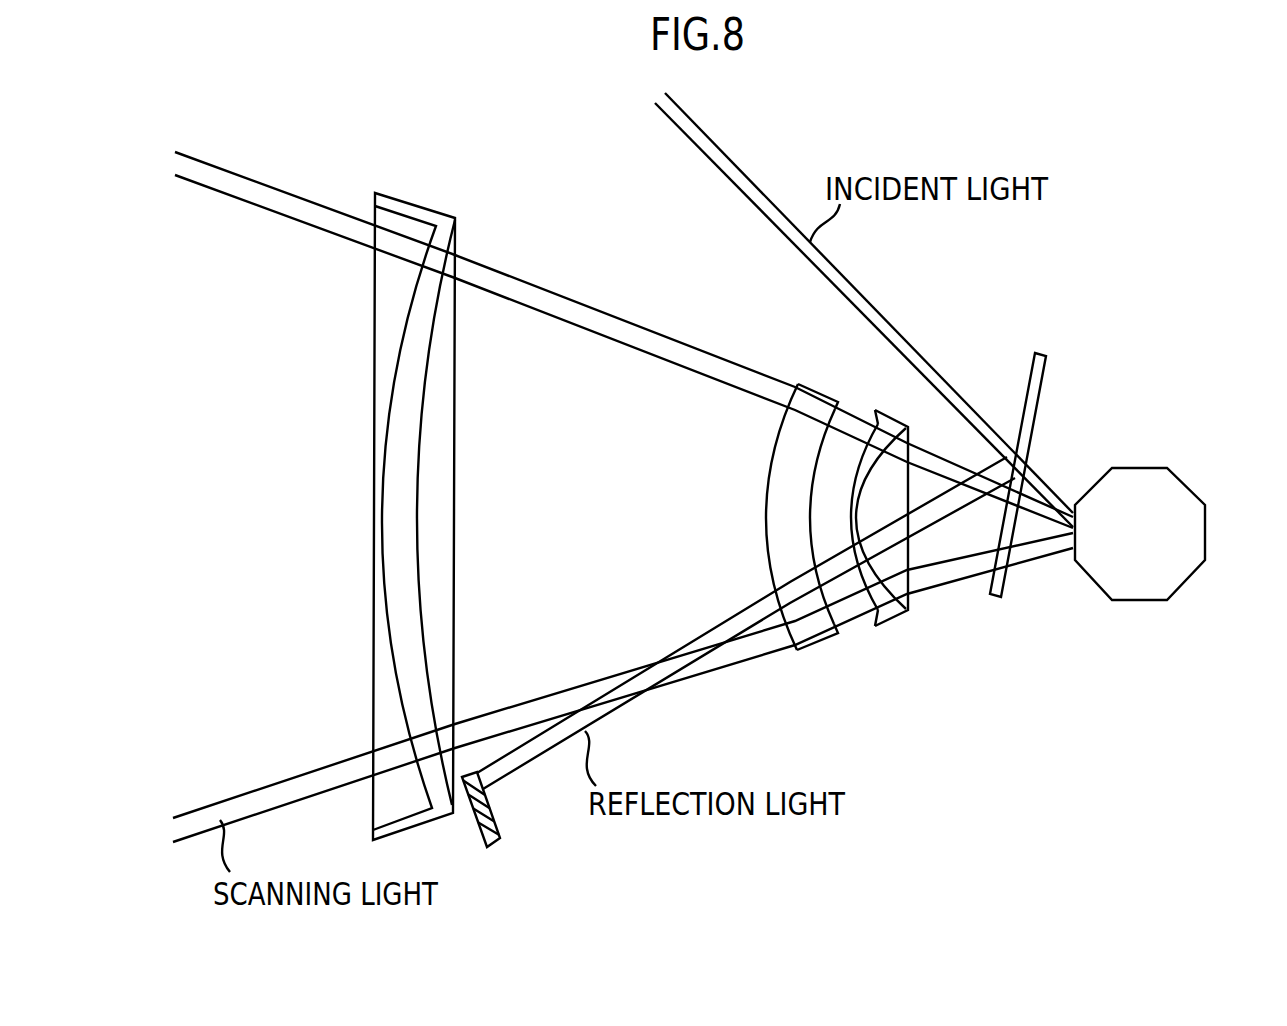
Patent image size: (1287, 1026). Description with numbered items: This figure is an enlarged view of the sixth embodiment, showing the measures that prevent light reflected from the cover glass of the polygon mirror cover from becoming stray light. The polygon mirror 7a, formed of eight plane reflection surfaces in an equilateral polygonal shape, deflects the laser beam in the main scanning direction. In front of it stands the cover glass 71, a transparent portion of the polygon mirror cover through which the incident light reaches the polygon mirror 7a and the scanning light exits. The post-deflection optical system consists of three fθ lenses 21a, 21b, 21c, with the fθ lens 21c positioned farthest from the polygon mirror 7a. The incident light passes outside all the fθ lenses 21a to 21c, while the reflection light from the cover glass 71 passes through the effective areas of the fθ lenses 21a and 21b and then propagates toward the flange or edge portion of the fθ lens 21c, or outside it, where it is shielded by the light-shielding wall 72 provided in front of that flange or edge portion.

The fθ lens 21a is at (888, 618).
The fθ lens 21b is at (818, 647).
The fθ lens 21c is at (455, 593).
The cover glass 71 is at (1047, 370).
The light-shielding wall 72 is at (500, 835).
The polygon mirror 7a is at (1165, 574).